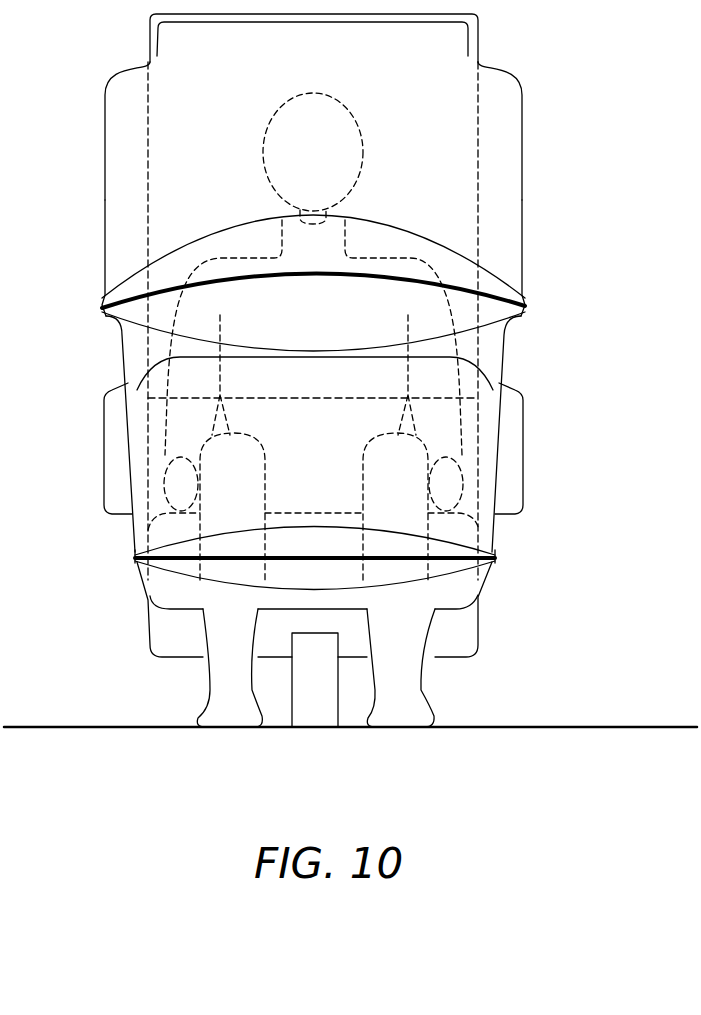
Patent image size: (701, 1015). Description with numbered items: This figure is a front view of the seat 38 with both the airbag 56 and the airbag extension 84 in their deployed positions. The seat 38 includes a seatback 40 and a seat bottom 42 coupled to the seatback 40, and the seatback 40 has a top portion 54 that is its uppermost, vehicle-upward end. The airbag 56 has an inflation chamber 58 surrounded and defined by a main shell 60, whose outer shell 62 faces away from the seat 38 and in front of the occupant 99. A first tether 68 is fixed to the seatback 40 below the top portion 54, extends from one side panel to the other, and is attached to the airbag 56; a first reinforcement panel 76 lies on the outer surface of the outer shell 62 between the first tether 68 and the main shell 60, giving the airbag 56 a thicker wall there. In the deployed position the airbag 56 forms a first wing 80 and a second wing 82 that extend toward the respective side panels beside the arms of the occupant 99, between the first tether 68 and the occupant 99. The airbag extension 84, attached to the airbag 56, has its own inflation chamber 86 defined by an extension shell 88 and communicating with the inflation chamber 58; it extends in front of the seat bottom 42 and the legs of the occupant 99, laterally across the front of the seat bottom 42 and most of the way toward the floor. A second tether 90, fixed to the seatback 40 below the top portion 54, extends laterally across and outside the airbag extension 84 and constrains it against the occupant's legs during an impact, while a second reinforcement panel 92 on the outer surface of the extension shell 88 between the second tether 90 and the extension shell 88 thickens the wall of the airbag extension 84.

The seat 38 is at (482, 613).
The seatback 40 is at (478, 232).
The seat bottom 42 is at (480, 635).
The top portion 54 is at (480, 32).
The airbag 56 is at (497, 130).
The inflation chamber 58 is at (500, 175).
The main shell 60 is at (105, 135).
The outer shell 62 is at (162, 187).
The first tether 68 is at (253, 275).
The first reinforcement panel 76 is at (418, 232).
The first wing 80 is at (525, 215).
The second wing 82 is at (105, 215).
The airbag extension 84 is at (490, 530).
The inflation chamber 86 is at (490, 465).
The extension shell 88 is at (440, 608).
The second tether 90 is at (507, 320).
The second reinforcement panel 92 is at (287, 527).
The occupant 99 is at (210, 638).